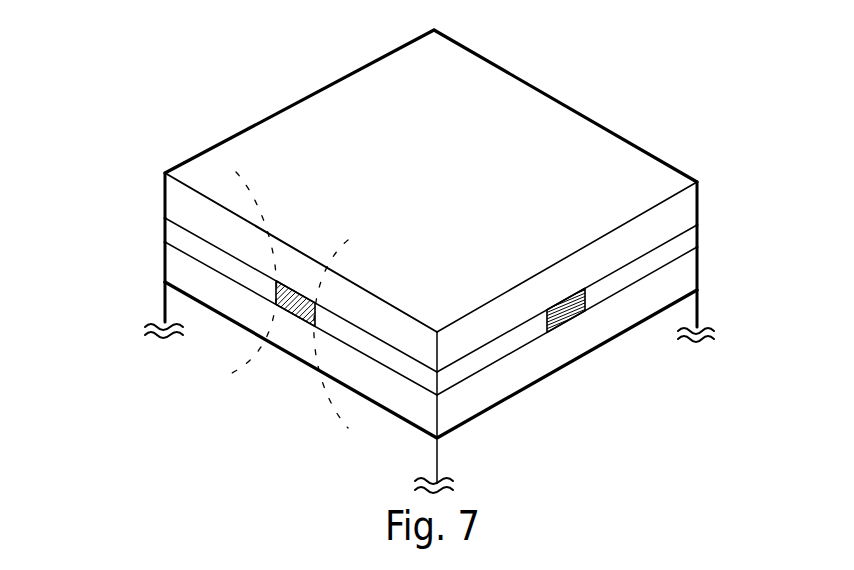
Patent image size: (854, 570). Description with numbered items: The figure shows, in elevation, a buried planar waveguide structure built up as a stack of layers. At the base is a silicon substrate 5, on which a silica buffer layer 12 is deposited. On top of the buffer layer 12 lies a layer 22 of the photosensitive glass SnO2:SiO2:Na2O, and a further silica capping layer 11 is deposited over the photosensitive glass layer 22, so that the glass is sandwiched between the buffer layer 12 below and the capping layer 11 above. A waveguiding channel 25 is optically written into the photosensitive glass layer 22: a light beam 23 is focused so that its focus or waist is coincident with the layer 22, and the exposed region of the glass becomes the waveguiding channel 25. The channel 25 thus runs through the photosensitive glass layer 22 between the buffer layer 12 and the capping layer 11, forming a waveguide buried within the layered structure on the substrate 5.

The silicon substrate 5 is at (676, 315).
The silica capping layer 11 is at (180, 205).
The silica buffer layer 12 is at (687, 272).
The photosensitive glass layer 22 is at (177, 237).
The light beam 23 is at (233, 176).
The waveguiding channel 25 is at (290, 310).